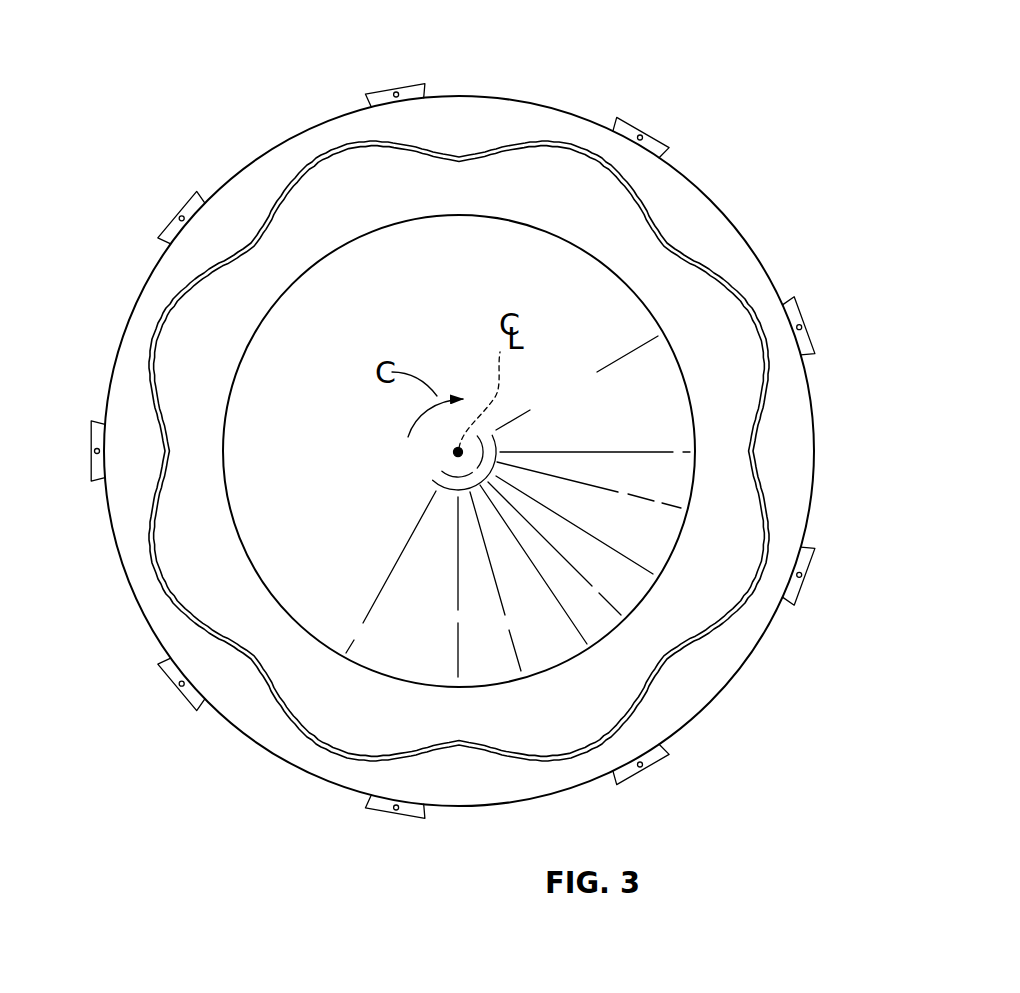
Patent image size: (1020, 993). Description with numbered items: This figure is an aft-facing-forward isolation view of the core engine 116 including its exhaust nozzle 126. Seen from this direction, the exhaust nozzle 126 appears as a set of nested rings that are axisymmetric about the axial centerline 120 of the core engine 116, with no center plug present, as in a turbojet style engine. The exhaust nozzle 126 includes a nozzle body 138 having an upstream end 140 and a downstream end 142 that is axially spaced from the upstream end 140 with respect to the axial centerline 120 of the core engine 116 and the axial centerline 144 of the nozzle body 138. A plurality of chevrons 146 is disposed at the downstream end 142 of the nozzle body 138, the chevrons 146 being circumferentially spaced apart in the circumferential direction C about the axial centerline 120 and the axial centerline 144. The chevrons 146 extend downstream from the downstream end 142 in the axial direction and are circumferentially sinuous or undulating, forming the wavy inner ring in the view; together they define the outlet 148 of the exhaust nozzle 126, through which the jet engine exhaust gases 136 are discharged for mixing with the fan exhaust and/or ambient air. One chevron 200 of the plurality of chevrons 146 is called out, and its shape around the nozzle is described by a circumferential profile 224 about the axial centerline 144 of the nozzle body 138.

The core engine 116 is at (352, 704).
The axial centerline 120 is at (490, 398).
The exhaust nozzle 126 is at (753, 247).
The jet engine exhaust gases 136 is at (479, 302).
The nozzle body 138 is at (128, 490).
The upstream end 140 is at (220, 185).
The downstream end 142 is at (777, 448).
The axial centerline of the nozzle body 144 is at (452, 452).
The chevrons 146 is at (456, 157).
The outlet 148 is at (577, 180).
The chevron 200 is at (322, 141).
The circumferential profile 224 is at (300, 192).